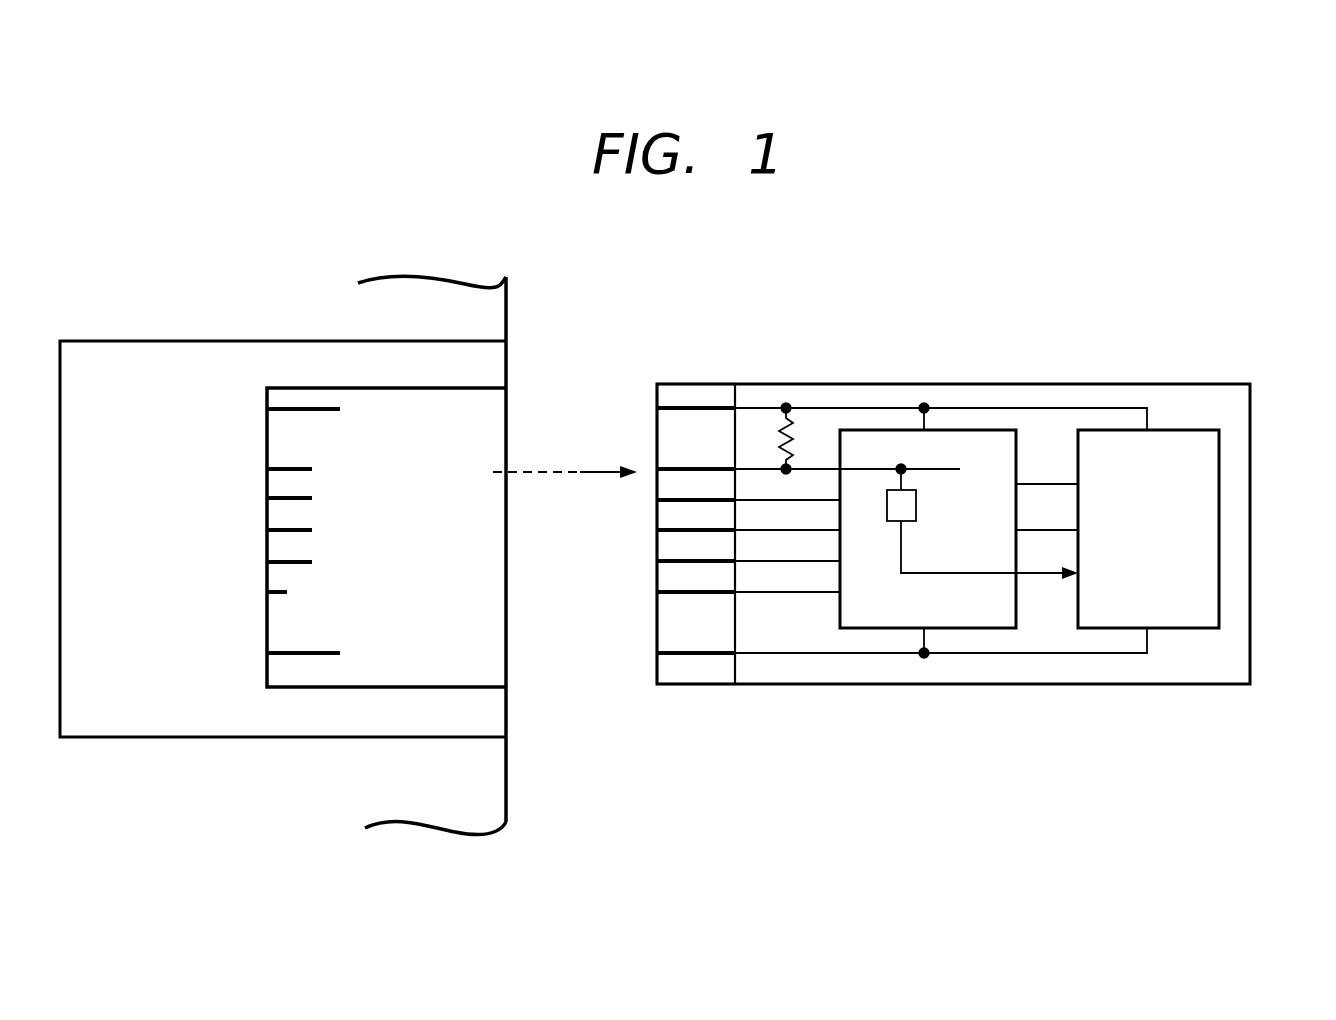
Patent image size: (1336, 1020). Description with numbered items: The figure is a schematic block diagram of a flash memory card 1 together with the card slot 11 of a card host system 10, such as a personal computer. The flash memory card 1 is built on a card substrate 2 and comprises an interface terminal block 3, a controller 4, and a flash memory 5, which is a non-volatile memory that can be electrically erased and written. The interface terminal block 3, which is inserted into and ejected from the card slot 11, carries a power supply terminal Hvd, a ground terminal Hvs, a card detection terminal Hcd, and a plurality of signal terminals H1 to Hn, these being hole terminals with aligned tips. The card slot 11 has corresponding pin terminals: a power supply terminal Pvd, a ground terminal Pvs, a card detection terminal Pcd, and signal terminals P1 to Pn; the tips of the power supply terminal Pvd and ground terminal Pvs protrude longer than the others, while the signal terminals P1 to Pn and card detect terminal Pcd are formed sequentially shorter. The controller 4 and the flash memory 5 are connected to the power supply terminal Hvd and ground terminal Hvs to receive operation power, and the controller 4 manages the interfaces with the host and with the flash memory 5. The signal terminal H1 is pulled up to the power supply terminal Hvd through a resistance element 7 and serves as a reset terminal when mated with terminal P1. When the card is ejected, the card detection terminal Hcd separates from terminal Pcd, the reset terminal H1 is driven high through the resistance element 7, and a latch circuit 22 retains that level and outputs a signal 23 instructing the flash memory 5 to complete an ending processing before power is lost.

The flash memory card 1 is at (943, 535).
The card substrate 2 is at (1240, 538).
The interface terminal block 3 is at (690, 680).
The controller 4 is at (952, 615).
The flash memory 5 is at (1170, 622).
The resistance element 7 is at (800, 434).
The card host system 10 is at (486, 313).
The card slot 11 is at (103, 348).
The latch circuit 22 is at (918, 504).
The signal 23 is at (932, 571).
The power supply terminal Pvd is at (273, 408).
The signal terminal P1 is at (273, 468).
The signal terminal Pn is at (273, 561).
The card detection terminal Pcd is at (273, 592).
The ground terminal Pvs is at (273, 652).
The power supply terminal Hvd is at (690, 407).
The signal terminal H1 is at (675, 468).
The signal terminal Hn is at (672, 560).
The card detection terminal Hcd is at (672, 591).
The ground terminal Hvs is at (672, 652).